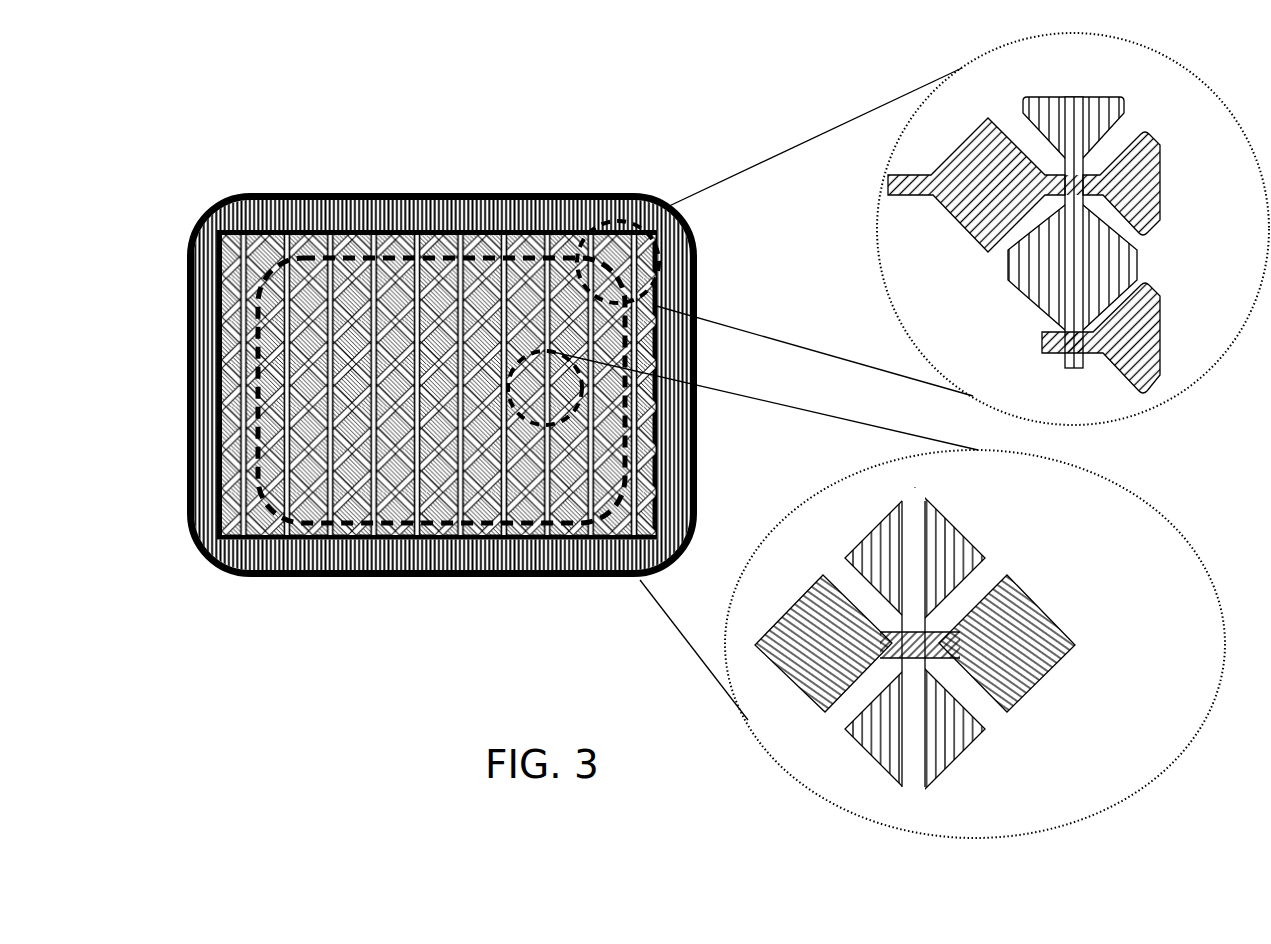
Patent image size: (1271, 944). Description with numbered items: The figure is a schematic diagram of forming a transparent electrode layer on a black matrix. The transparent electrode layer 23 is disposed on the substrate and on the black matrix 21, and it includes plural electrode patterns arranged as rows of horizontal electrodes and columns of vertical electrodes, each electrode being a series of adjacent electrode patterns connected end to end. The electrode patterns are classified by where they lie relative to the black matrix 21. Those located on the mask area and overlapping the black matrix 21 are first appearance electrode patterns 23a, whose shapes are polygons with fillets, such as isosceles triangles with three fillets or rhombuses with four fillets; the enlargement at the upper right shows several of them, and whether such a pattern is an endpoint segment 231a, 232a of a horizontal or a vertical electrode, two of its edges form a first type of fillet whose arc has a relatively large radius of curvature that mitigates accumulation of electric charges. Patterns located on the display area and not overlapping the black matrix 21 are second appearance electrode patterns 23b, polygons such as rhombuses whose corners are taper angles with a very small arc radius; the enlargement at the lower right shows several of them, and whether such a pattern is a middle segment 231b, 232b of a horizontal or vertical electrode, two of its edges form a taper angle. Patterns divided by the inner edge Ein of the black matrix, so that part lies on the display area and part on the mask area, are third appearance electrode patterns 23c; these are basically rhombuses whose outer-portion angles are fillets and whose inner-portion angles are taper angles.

The black matrix 21 is at (442, 414).
The transparent electrode layer 23 is at (442, 414).
The first appearance electrode pattern 23a is at (427, 193).
The second appearance electrode pattern 23b is at (538, 193).
The third appearance electrode pattern 23c is at (580, 193).
The inner edge of the black matrix Ein is at (548, 578).
The endpoint segment 232a is at (1107, 98).
The endpoint segment 231a is at (1143, 200).
The middle segment 232b is at (918, 526).
The middle segment 231b is at (1022, 610).